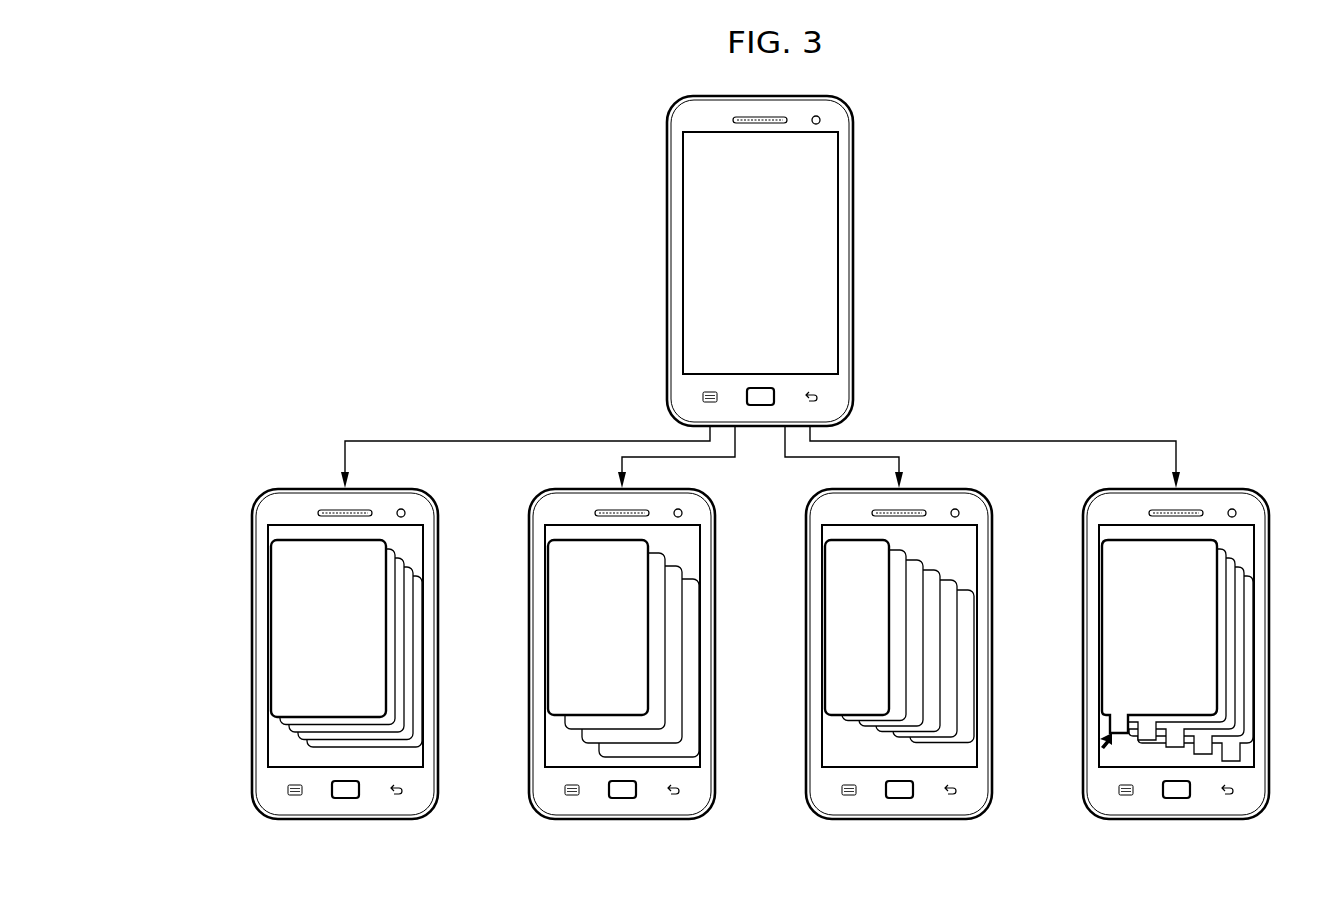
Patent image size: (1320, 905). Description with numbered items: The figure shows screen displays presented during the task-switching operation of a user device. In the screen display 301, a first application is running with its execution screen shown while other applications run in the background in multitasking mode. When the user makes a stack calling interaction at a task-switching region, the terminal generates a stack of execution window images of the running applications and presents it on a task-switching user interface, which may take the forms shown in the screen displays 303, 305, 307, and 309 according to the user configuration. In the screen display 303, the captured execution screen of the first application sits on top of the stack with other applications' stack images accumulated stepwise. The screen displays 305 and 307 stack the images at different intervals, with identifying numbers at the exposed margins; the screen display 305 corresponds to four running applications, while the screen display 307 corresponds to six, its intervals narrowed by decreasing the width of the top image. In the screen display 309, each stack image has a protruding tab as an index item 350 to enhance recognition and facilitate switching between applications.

The screen display 301 is at (760, 249).
The screen display 303 is at (320, 670).
The screen display 305 is at (597, 670).
The screen display 307 is at (874, 670).
The screen display 309 is at (1152, 670).
The index item 350 is at (1100, 748).